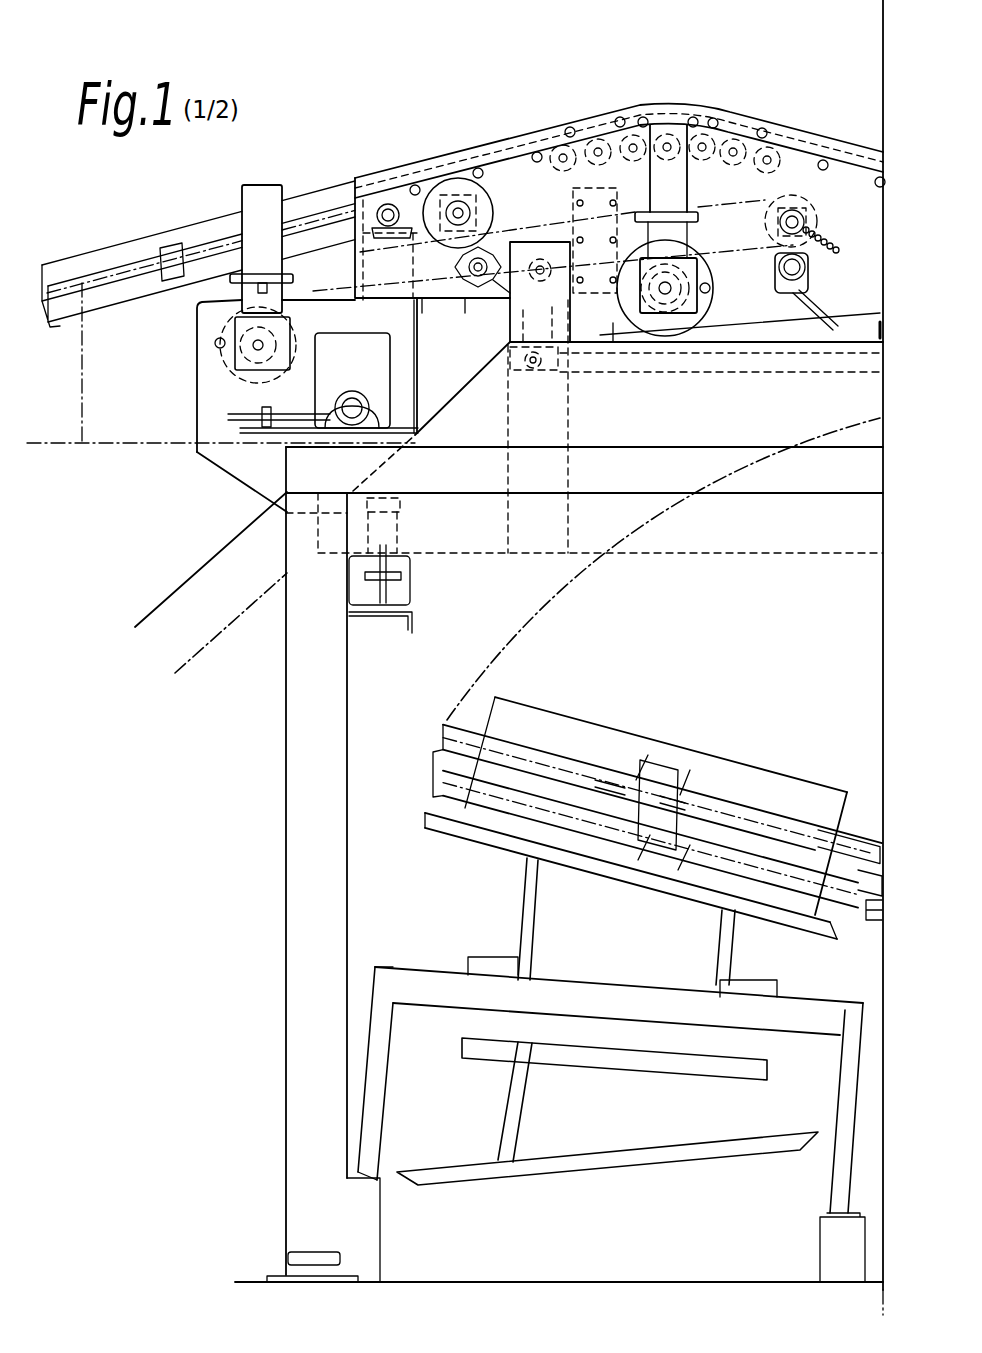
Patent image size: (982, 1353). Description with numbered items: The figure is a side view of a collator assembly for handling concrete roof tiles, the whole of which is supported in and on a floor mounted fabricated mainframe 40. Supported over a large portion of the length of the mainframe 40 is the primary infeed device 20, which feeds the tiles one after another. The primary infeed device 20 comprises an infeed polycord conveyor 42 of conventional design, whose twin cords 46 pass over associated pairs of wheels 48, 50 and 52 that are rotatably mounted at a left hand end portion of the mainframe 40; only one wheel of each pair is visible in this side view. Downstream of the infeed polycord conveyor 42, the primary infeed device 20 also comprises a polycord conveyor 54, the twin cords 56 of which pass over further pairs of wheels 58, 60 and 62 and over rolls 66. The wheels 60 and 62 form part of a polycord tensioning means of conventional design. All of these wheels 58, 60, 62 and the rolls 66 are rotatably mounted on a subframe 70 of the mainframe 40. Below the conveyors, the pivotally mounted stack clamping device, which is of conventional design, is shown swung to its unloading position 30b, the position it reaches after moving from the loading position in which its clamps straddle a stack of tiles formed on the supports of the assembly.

The primary infeed device 20 is at (858, 22).
The unloading position 30b is at (433, 755).
The mainframe 40 is at (253, 845).
The infeed polycord conveyor 42 is at (327, 128).
The twin cords 46 is at (82, 388).
The wheels 48 is at (448, 198).
The wheels 50 is at (217, 365).
The wheels 52 is at (362, 392).
The polycord conveyor 54 is at (765, 110).
The twin cords 56 is at (797, 325).
The wheels 58 is at (383, 187).
The wheels 60 is at (818, 212).
The wheels 62 is at (678, 332).
The rolls 66 is at (705, 128).
The subframe 70 is at (541, 204).